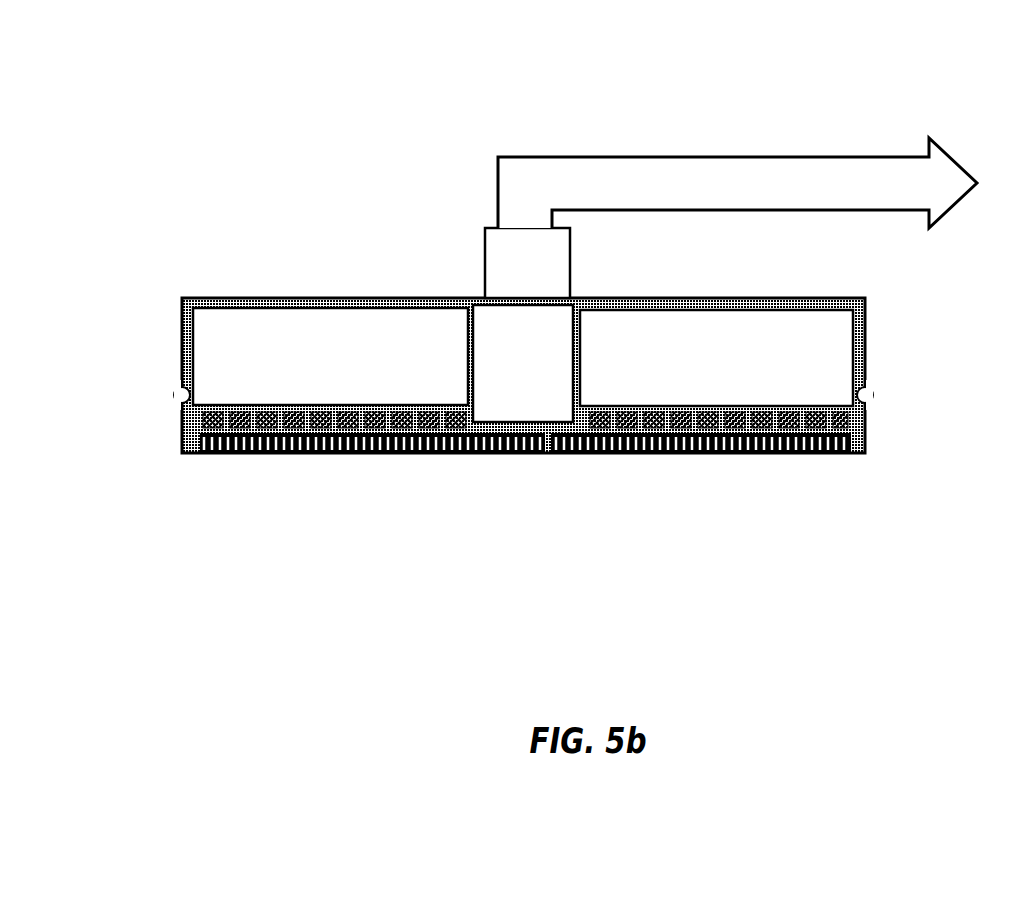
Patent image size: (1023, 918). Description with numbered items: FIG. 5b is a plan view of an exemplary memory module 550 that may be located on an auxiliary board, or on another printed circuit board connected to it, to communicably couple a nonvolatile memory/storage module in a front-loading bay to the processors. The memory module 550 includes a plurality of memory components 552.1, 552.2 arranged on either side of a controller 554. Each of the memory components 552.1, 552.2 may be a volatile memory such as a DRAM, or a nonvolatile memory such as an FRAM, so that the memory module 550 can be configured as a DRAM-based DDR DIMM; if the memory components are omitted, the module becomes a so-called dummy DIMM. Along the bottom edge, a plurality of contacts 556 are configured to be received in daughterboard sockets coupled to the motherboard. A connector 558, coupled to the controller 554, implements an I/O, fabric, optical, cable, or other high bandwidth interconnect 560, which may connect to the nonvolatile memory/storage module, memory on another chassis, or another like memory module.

The memory module 550 is at (250, 72).
The memory component 552.1 is at (302, 381).
The memory component 552.2 is at (687, 383).
The controller 554 is at (505, 385).
The contacts 556 is at (197, 467).
The connector 558 is at (505, 277).
The high bandwidth interconnect 560 is at (578, 157).